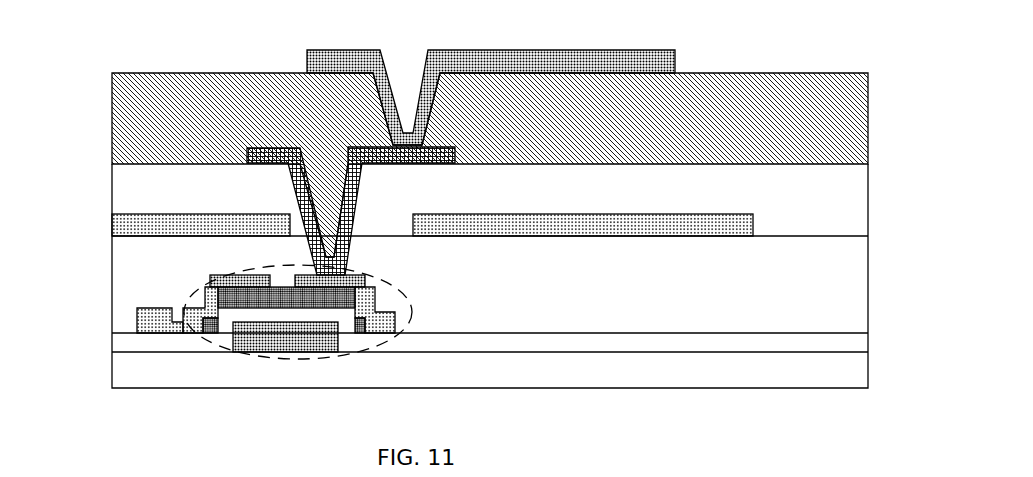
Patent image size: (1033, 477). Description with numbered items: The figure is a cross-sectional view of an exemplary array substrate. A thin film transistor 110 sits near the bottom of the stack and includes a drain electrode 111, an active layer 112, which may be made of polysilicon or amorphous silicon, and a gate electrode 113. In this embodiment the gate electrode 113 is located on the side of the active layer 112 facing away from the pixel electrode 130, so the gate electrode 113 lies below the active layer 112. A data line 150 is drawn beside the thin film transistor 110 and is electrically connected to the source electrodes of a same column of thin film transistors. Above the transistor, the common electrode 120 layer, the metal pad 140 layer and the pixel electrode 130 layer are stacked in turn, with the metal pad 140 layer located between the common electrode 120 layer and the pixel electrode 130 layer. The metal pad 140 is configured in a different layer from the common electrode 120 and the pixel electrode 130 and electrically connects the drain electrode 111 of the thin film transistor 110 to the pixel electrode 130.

The thin film transistor 110 is at (290, 362).
The drain electrode 111 is at (372, 297).
The active layer 112 is at (366, 325).
The gate electrode 113 is at (300, 343).
The common electrode 120 is at (731, 226).
The pixel electrode 130 is at (527, 57).
The metal pad 140 is at (247, 160).
The data line 150 is at (147, 325).